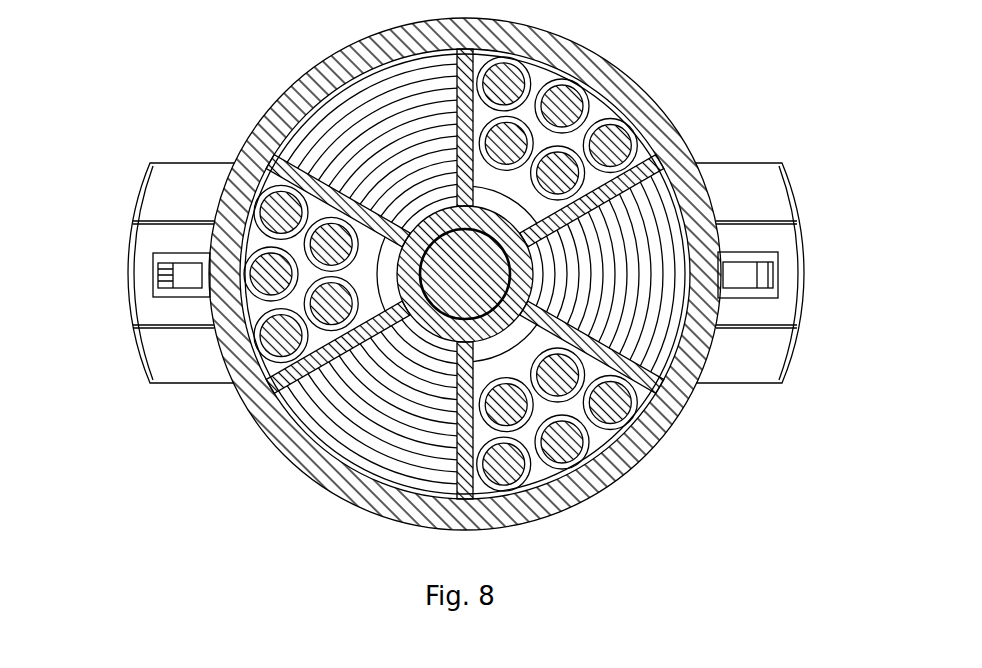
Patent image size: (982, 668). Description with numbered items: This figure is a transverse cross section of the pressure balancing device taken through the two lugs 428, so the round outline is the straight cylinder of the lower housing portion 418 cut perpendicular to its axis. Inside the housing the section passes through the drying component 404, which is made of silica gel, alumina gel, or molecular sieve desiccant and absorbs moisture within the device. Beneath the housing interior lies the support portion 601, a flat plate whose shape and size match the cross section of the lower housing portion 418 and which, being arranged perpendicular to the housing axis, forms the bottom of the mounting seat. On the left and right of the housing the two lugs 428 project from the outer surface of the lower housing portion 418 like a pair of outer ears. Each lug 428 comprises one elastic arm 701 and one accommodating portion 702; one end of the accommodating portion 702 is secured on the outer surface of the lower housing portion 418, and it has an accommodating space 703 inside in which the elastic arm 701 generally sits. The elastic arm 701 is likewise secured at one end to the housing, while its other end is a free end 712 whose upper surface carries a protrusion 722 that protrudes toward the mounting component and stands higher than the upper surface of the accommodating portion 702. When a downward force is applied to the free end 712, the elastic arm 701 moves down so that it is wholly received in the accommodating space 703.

The drying component 404 is at (624, 136).
The lower housing portion 418 is at (298, 447).
The lug 428 is at (768, 353).
The support portion 601 is at (350, 103).
The elastic arm 701 is at (180, 272).
The accommodating portion 702 is at (185, 330).
The accommodating space 703 is at (165, 290).
The free end 712 is at (770, 267).
The protrusion 722 is at (770, 283).